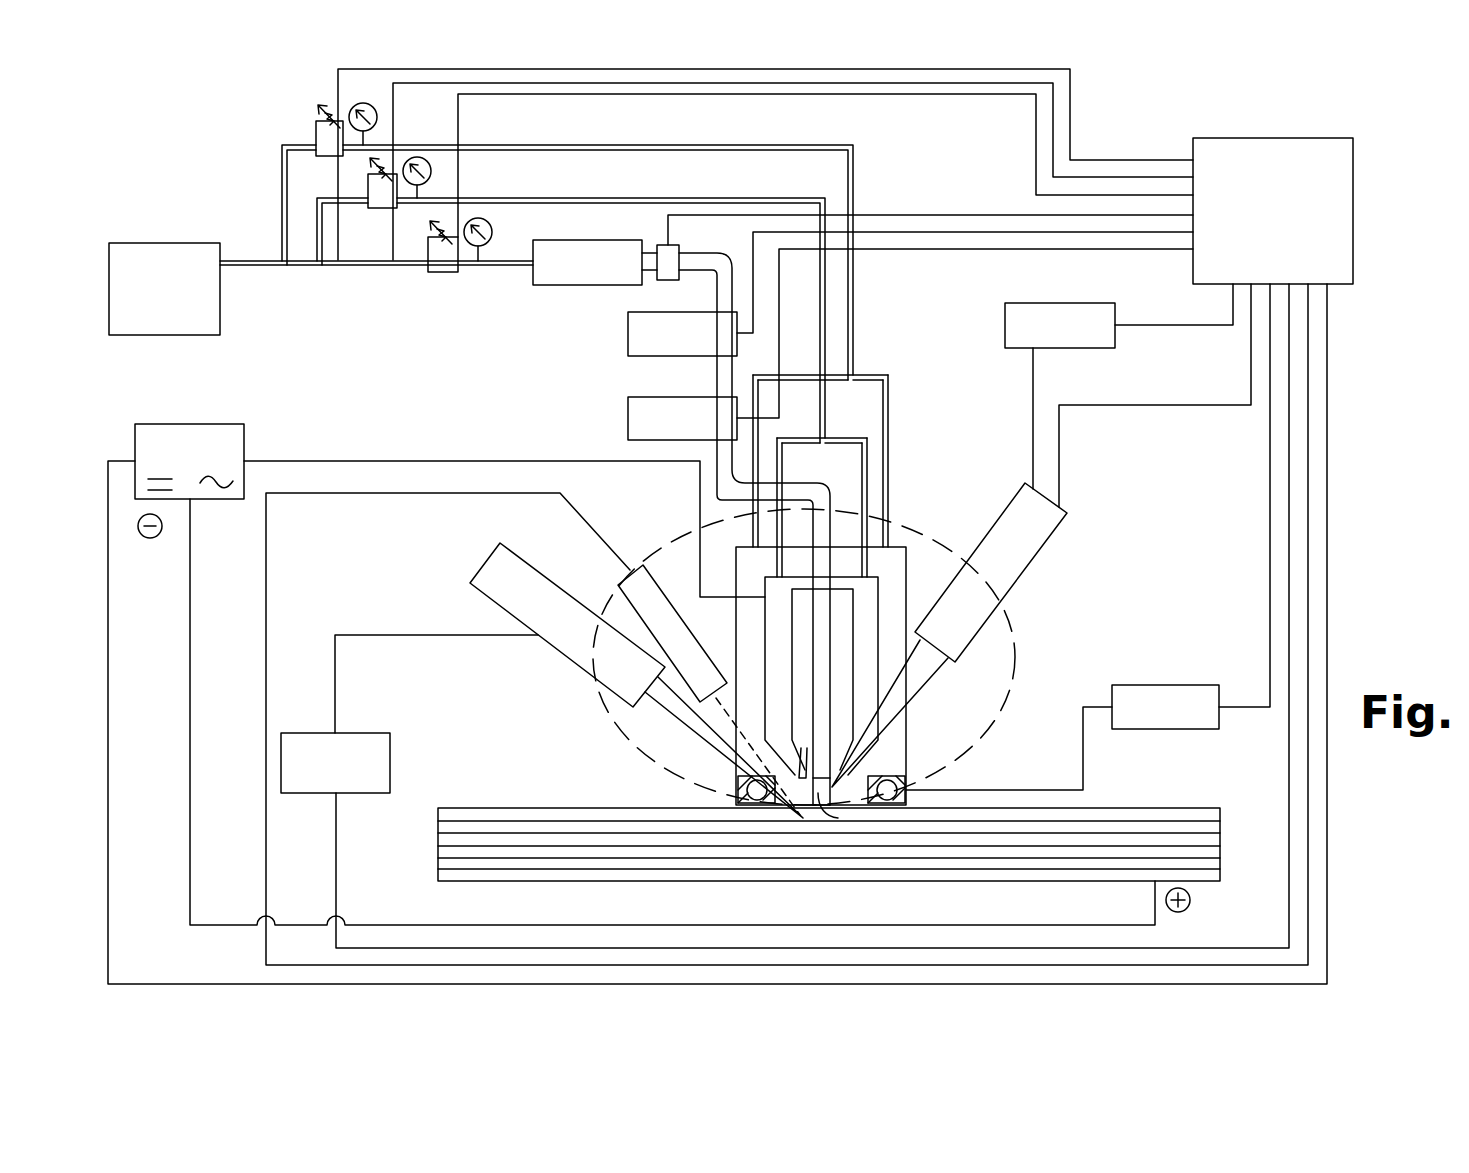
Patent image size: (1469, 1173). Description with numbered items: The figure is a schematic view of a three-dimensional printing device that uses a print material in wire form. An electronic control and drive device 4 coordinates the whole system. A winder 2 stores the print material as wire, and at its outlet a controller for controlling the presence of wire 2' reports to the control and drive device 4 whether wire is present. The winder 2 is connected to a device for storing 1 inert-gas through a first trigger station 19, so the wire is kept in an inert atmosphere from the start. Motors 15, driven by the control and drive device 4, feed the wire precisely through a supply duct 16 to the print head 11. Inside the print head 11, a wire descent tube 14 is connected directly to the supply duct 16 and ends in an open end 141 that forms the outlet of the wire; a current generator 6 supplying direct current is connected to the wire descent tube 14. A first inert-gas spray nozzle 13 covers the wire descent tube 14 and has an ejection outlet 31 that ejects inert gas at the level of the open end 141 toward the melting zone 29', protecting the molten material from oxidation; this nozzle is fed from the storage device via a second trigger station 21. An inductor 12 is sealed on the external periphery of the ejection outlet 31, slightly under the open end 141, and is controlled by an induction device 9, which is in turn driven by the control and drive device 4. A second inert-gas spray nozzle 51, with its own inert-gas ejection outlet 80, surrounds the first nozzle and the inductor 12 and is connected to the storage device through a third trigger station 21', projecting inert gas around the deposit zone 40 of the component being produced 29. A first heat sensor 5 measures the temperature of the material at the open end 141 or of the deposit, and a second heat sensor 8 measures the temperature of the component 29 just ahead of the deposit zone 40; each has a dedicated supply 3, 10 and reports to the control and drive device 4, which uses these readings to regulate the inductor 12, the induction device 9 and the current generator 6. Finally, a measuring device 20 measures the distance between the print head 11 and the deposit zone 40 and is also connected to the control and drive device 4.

The device for storing inert-gas 1 is at (164, 289).
The winder 2 is at (587, 262).
The controller for controlling the presence of wire 2' is at (638, 289).
The dedicated supply 3 is at (1060, 325).
The control and drive device 4 is at (1273, 211).
The first heat sensor 5 is at (1015, 510).
The current generator 6 is at (189, 461).
The second heat sensor 8 is at (556, 640).
The induction device 9 is at (1165, 707).
The dedicated supply 10 is at (335, 763).
The print head 11 is at (1015, 660).
The inductor 12 is at (908, 775).
The first inert-gas spray nozzle 13 is at (907, 565).
The wire descent tube 14 is at (853, 610).
The motor 15 is at (682, 376).
The supply duct 16 is at (717, 378).
The first trigger station 19 is at (436, 272).
The measuring device 20 is at (642, 563).
The second trigger station 21 is at (396, 207).
The third trigger station 21' is at (330, 112).
The component being produced 29 is at (829, 863).
The melting zone 29' is at (818, 854).
The ejection outlet 31 is at (848, 790).
The deposit zone 40 is at (832, 812).
The second inert-gas spray nozzle 51 is at (907, 707).
The inert-gas ejection outlet 80 is at (737, 750).
The open end 141 is at (801, 805).